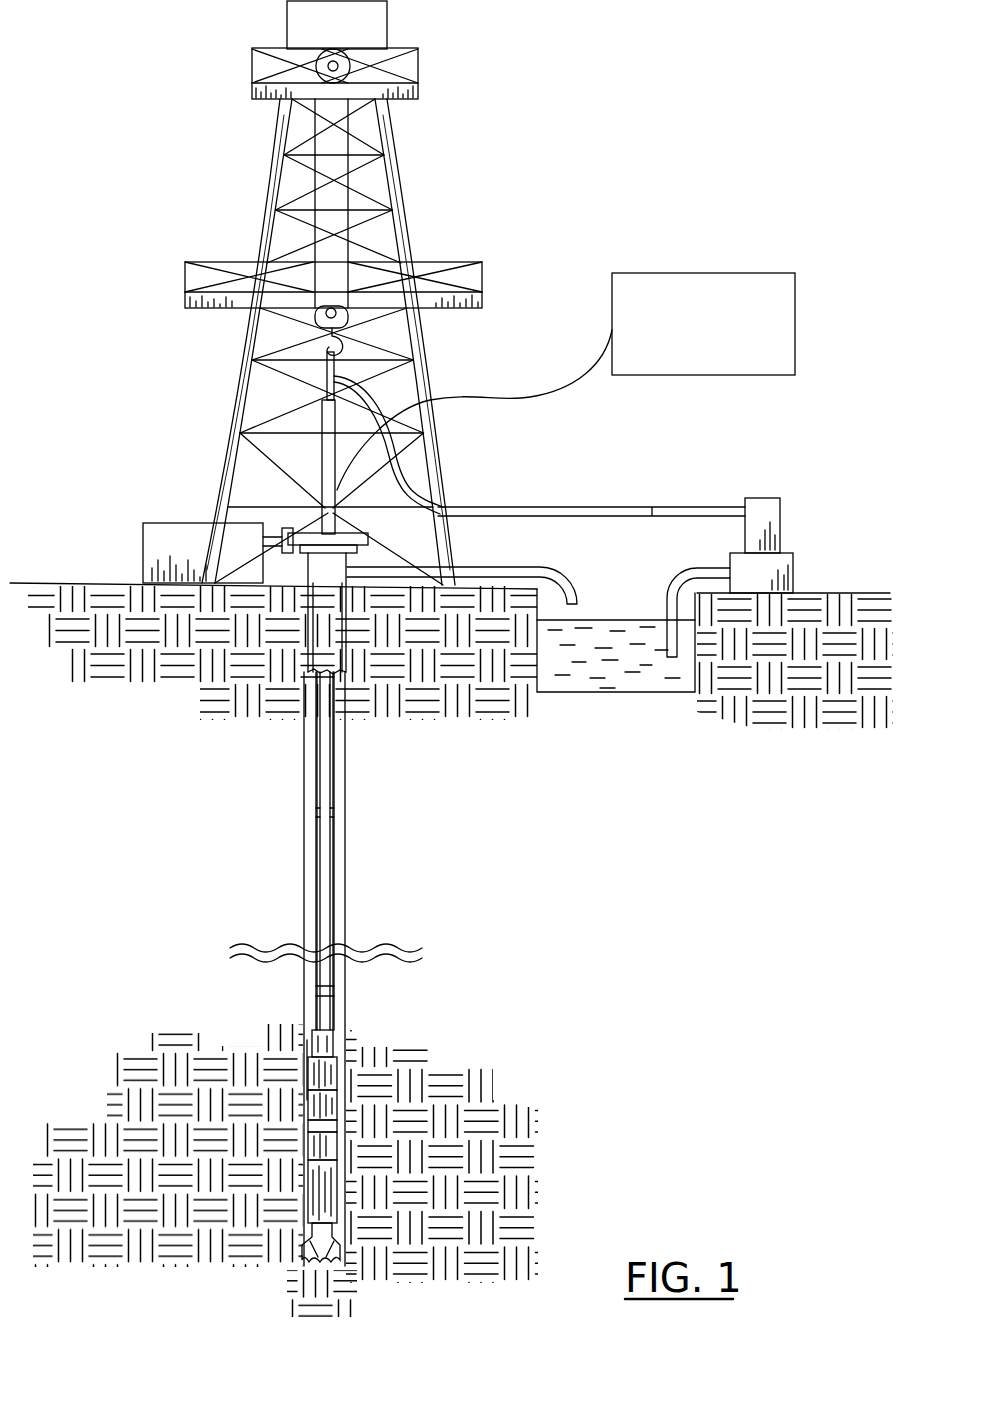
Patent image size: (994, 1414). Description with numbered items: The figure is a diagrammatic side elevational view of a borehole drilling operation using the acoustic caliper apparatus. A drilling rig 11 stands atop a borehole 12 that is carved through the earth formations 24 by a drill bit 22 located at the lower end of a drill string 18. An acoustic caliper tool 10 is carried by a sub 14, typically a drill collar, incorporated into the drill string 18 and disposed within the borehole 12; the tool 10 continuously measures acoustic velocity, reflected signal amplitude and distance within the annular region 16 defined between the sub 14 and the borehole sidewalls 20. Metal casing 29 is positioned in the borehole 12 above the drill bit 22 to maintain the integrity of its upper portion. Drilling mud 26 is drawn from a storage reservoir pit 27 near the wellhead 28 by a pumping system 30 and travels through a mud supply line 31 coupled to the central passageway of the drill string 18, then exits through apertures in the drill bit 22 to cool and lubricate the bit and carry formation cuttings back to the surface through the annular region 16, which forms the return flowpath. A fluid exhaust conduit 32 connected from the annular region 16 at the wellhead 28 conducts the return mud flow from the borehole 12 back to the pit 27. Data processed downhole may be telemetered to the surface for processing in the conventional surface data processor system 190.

The acoustic caliper tool 10 is at (325, 1075).
The drilling rig 11 is at (445, 178).
The borehole 12 is at (335, 850).
The sub 14 is at (325, 1207).
The annular region 16 is at (305, 1072).
The drill string 18 is at (327, 990).
The borehole sidewalls 20 is at (345, 913).
The drill bit 22 is at (300, 1257).
The earth formations 24 is at (485, 1230).
The drilling mud 26 is at (627, 657).
The storage reservoir pit 27 is at (552, 692).
The wellhead 28 is at (460, 557).
The metal casing 29 is at (320, 637).
The pumping system 30 is at (780, 533).
The mud supply line 31 is at (652, 507).
The fluid exhaust conduit 32 is at (537, 567).
The surface data processor system 190 is at (653, 273).